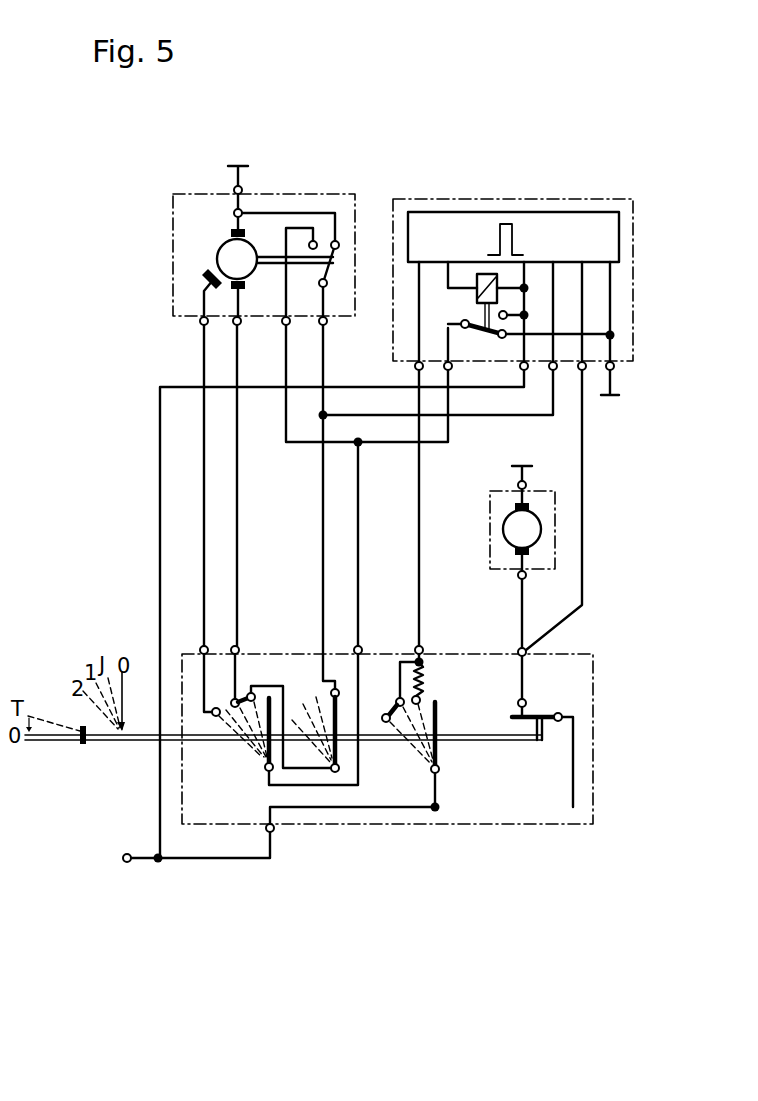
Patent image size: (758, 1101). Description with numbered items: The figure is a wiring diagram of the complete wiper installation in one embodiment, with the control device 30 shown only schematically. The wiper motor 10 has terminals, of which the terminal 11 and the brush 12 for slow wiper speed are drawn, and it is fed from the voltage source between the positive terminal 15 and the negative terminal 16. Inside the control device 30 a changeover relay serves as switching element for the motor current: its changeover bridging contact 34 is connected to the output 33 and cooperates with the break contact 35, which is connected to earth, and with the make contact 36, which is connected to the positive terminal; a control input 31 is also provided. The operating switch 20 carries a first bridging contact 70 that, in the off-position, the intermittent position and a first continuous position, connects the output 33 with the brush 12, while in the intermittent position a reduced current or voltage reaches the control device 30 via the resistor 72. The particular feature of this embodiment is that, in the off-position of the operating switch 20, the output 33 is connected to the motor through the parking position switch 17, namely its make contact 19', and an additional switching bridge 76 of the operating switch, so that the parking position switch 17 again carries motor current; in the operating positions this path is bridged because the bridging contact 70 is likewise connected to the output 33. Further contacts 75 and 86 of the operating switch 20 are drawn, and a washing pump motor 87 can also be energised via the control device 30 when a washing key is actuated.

The wiper motor 10 is at (221, 251).
The terminal 11 is at (231, 226).
The brush 12 is at (247, 286).
The positive terminal 15 is at (127, 863).
The negative terminal 16 is at (614, 370).
The parking position switch 17 is at (339, 272).
The make contact 19' is at (286, 234).
The operating switch 20 is at (535, 825).
The control device 30 is at (627, 306).
The control input 31 is at (556, 371).
The output 33 is at (451, 371).
The changeover bridging contact 34 is at (494, 337).
The break contact 35 is at (501, 339).
The make contact 36 is at (508, 312).
The first bridging contact 70 is at (263, 752).
The resistor 72 is at (424, 672).
The switch contact 75 is at (441, 714).
The additional switching bridge 76 is at (338, 749).
The washer switch contact 86 is at (544, 707).
The washing pump motor 87 is at (547, 568).